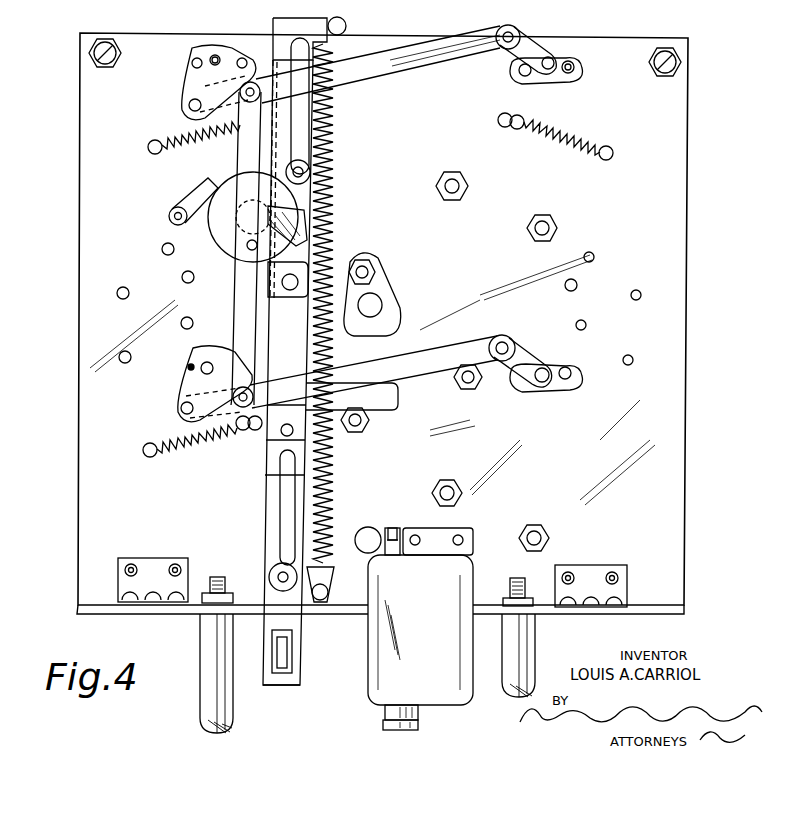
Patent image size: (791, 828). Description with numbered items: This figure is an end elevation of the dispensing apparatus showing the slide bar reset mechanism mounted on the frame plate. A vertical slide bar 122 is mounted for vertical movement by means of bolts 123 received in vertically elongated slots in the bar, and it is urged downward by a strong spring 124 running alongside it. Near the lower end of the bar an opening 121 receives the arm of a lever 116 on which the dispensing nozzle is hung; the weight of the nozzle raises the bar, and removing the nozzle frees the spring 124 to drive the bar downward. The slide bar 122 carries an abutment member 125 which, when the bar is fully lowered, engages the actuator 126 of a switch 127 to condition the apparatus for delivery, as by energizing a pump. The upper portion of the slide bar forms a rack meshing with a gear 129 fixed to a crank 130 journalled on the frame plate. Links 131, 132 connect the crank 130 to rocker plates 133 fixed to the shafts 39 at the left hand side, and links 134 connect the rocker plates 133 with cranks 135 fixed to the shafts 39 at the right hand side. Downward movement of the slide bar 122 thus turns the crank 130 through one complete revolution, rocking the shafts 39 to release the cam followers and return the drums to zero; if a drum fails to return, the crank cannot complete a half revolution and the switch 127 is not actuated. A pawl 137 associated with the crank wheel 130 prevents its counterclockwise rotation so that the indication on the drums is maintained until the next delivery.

The shaft 39 is at (250, 84).
The lever 116 is at (284, 655).
The opening 121 is at (282, 672).
The slide bar 122 is at (275, 502).
The bolts 123 is at (304, 174).
The spring 124 is at (333, 494).
The abutment member 125 is at (398, 405).
The actuator 126 is at (393, 530).
The switch 127 is at (445, 682).
The gear 129 is at (236, 230).
The crank 130 is at (240, 250).
The link 131 is at (240, 154).
The link 132 is at (250, 299).
The rocker plates 133 is at (206, 81).
The links 134 is at (430, 54).
The cranks 135 is at (524, 44).
The pawl 137 is at (210, 196).